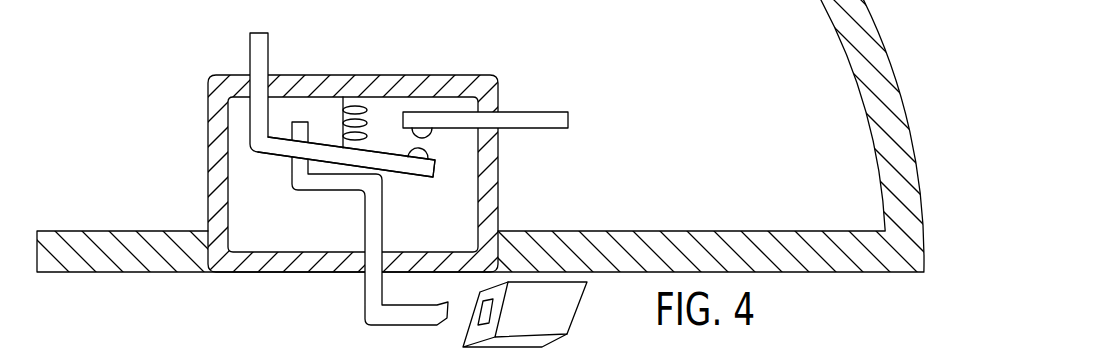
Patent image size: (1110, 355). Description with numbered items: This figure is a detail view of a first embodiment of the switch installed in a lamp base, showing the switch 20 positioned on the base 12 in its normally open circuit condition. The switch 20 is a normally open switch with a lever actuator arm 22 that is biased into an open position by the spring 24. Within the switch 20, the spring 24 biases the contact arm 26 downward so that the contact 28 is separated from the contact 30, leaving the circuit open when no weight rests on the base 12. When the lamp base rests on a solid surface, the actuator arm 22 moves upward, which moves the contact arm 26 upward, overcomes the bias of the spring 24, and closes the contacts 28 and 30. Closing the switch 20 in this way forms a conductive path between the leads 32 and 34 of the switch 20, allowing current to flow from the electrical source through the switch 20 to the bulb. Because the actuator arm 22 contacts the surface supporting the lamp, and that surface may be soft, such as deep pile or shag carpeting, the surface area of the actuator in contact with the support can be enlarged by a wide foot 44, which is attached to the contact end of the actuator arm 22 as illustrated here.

The base 12 is at (795, 237).
The switch 20 is at (181, 134).
The lever actuator arm 22 is at (403, 318).
The spring 24 is at (366, 110).
The contact arm 26 is at (383, 162).
The contact 28 is at (428, 155).
The contact 30 is at (431, 137).
The lead 32 is at (260, 60).
The lead 34 is at (530, 114).
The wide foot 44 is at (548, 308).